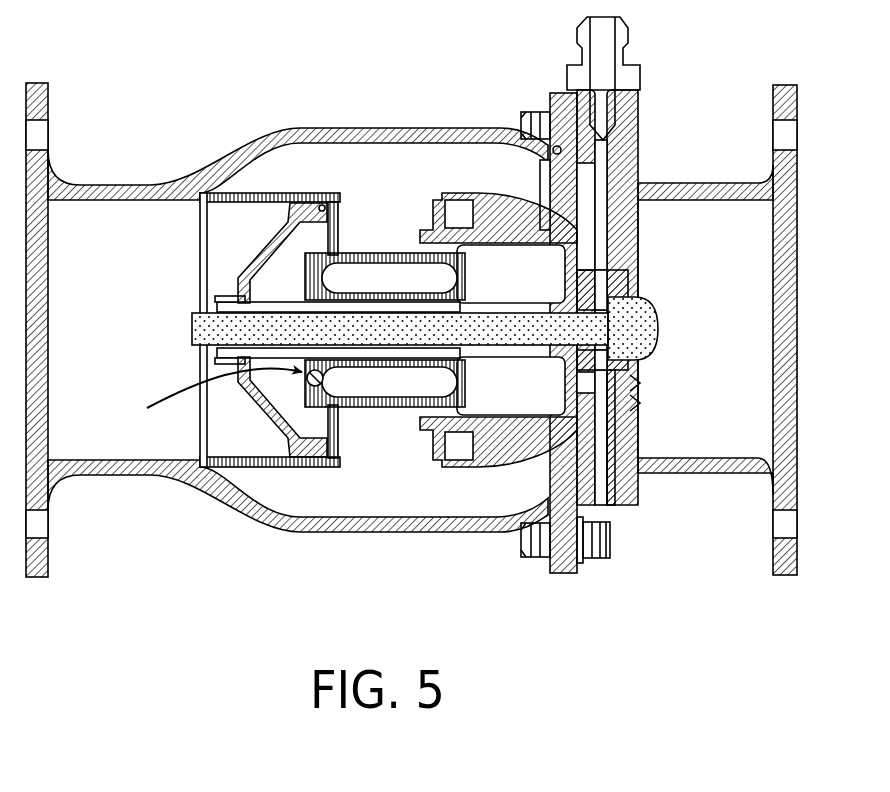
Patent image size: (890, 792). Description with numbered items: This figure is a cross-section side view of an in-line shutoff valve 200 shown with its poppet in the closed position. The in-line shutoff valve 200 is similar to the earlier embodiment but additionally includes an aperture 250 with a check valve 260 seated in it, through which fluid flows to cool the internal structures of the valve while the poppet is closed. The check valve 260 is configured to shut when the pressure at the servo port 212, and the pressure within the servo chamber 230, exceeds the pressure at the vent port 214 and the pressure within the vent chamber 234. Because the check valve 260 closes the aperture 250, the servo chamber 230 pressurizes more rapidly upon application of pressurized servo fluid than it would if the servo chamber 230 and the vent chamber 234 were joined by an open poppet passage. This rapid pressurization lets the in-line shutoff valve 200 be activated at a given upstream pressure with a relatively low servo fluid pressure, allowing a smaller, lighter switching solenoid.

The in-line shutoff valve 200 is at (411, 383).
The servo port 212 is at (603, 46).
The vent port 214 is at (603, 477).
The servo chamber 230 is at (293, 262).
The vent chamber 234 is at (528, 400).
The aperture 250 is at (198, 396).
The check valve 260 is at (308, 388).